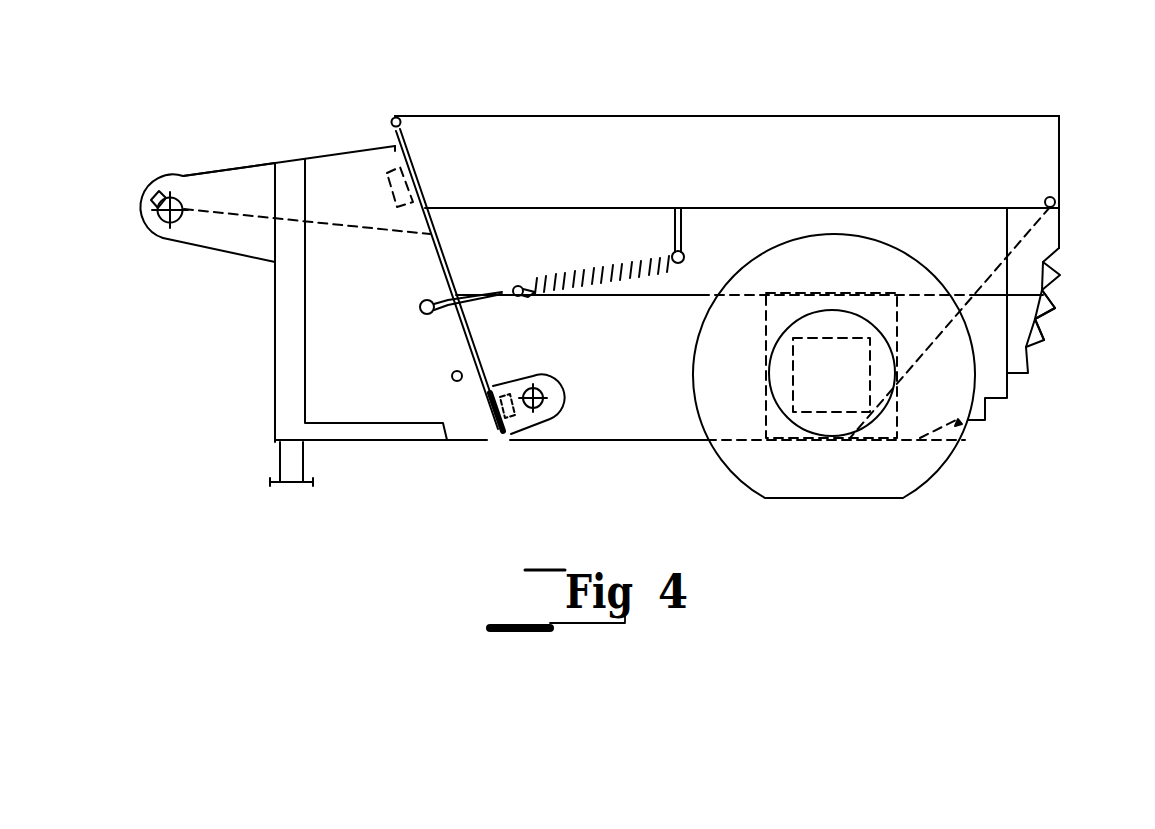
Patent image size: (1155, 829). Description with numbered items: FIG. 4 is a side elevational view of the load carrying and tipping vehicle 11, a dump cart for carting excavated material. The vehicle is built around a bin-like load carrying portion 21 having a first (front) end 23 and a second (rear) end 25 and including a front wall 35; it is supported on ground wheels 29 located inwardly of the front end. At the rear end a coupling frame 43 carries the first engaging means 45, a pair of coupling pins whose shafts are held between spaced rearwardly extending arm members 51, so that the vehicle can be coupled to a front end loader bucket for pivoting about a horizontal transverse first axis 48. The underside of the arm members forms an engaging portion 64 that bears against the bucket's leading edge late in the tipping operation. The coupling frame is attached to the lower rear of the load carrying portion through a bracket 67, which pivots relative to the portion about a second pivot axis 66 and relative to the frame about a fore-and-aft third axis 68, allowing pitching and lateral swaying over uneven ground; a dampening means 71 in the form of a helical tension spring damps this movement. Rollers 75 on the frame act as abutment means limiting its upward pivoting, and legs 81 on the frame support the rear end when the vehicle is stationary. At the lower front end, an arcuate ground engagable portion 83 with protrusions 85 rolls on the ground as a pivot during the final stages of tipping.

The load carrying and tipping vehicle 11 is at (556, 84).
The load carrying portion 21 is at (725, 116).
The first (front) end 23 is at (1062, 165).
The second (rear) end 25 is at (388, 133).
The ground wheels 29 is at (915, 472).
The front wall 35 is at (1058, 194).
The coupling frame 43 is at (281, 158).
The first engaging means 45 is at (180, 197).
The first axis 48 is at (160, 215).
The arm members 51 is at (239, 168).
The engaging portion 64 is at (332, 220).
The second pivot axis 66 is at (557, 393).
The bracket 67 is at (535, 422).
The third axis 68 is at (490, 420).
The dampening means 71 is at (557, 287).
The rollers 75 is at (403, 177).
The legs 81 is at (299, 472).
The ground engagable portion 83 is at (1028, 350).
The protrusions 85 is at (1040, 330).